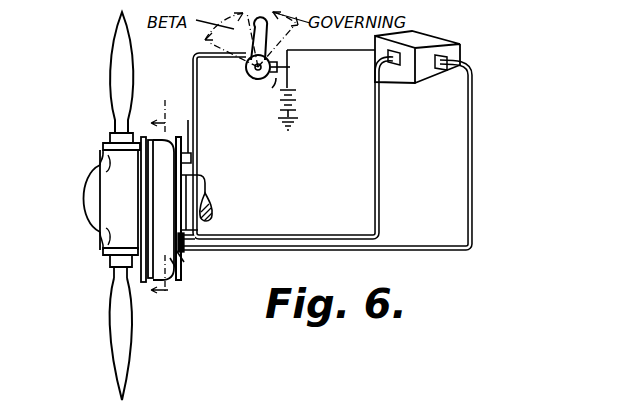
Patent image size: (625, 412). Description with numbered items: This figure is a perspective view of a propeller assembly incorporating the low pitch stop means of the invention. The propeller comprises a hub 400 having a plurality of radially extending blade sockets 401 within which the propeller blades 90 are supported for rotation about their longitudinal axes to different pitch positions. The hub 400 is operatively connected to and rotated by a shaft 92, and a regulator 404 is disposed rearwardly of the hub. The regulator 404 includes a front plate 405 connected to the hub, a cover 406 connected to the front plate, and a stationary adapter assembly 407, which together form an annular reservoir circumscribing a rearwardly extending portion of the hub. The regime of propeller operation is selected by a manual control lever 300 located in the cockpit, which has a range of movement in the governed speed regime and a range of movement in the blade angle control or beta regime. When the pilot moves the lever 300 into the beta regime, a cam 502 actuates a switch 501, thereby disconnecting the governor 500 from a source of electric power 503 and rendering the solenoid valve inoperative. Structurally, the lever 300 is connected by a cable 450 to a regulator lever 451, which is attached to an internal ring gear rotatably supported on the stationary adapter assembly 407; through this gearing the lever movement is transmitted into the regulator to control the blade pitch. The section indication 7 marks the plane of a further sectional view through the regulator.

The propeller blades 90 is at (113, 52).
The hub 400 is at (121, 240).
The blade sockets 401 is at (115, 158).
The regulator 404 is at (174, 270).
The front plate 405 is at (150, 133).
The cover 406 is at (187, 150).
The stationary adapter assembly 407 is at (181, 258).
The cable 450 is at (194, 66).
The regulator lever 451 is at (174, 162).
The shaft 92 is at (212, 200).
The section line 7 is at (169, 208).
The manual control lever 300 is at (268, 35).
The governor 500 is at (462, 49).
The switch 501 is at (290, 68).
The cam 502 is at (276, 78).
The source of electric power 503 is at (300, 96).